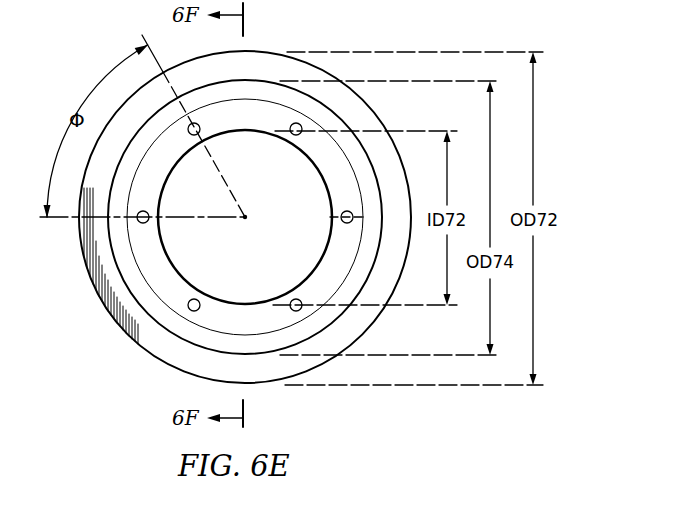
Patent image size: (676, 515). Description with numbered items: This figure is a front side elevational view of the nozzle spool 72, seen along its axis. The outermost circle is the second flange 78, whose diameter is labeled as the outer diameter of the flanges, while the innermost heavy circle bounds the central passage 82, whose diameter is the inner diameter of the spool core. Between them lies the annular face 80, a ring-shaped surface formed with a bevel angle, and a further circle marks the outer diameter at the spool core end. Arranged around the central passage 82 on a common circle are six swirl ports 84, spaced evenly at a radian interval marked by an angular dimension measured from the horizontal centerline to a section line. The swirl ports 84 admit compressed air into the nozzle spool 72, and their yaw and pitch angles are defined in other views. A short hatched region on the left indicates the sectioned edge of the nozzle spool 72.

The nozzle spool 72 is at (88, 331).
The second flange 78 is at (150, 355).
The annular face 80 is at (319, 282).
The central passage 82 is at (226, 267).
The swirl ports 84 is at (340, 212).